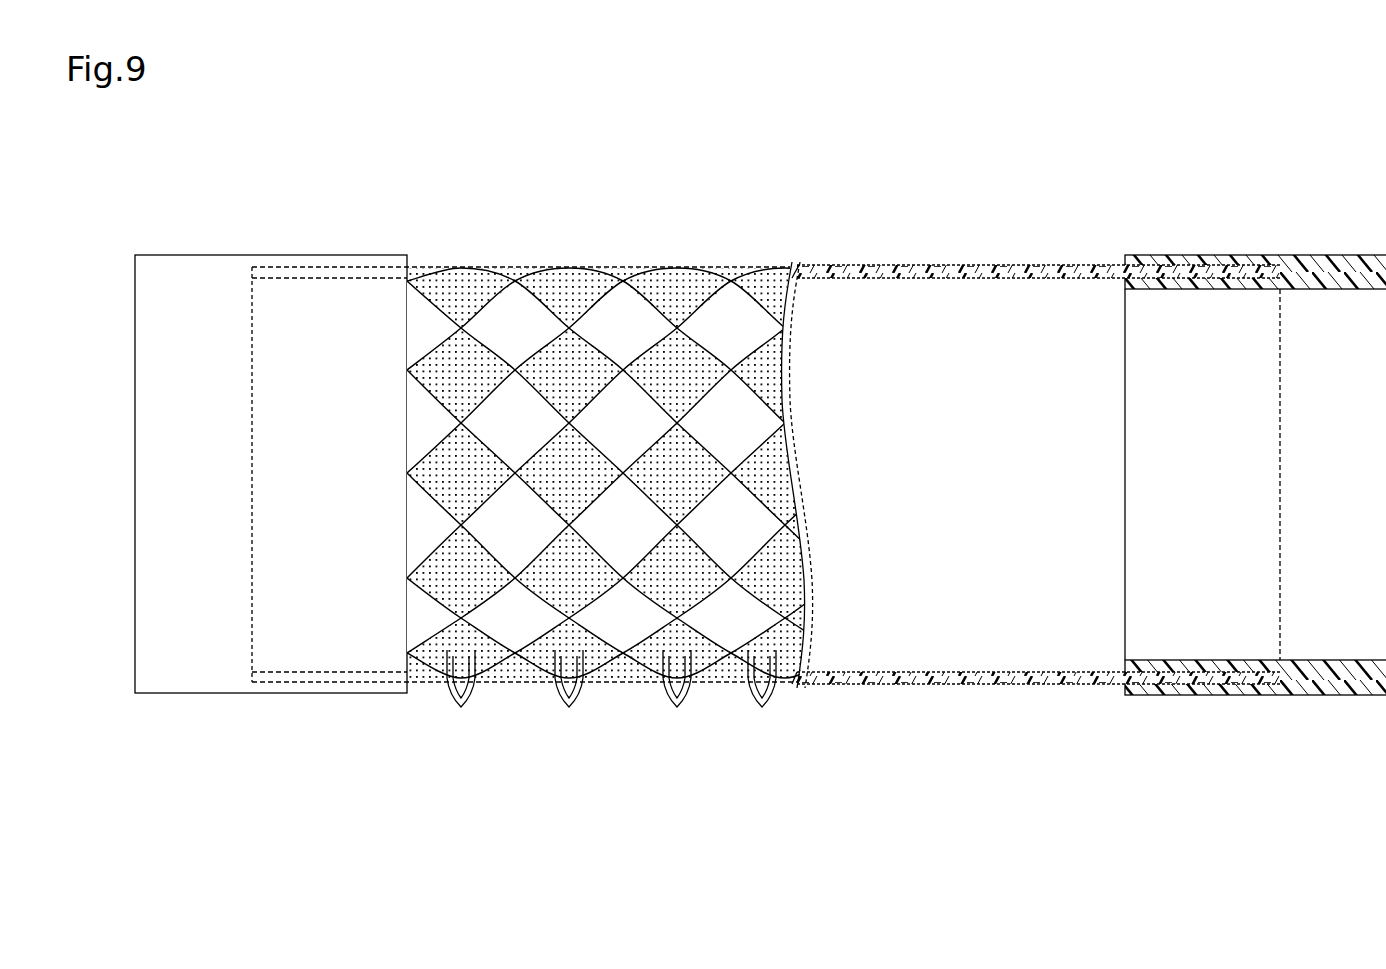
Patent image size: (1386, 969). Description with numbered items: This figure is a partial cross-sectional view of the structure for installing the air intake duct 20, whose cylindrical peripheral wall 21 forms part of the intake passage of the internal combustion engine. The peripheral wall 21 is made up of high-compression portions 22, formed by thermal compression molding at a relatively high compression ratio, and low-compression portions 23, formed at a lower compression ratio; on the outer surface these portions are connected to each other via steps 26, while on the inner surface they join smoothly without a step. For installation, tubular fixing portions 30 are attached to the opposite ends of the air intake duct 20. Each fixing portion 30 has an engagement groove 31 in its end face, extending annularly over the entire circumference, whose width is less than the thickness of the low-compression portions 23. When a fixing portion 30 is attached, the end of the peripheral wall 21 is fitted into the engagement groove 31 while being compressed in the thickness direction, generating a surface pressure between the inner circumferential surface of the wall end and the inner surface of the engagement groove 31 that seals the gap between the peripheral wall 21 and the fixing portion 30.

The air intake duct 20 is at (583, 410).
The peripheral wall 21 is at (330, 265).
The high-compression portions 22 is at (452, 300).
The low-compression portions 23 is at (512, 274).
The steps 26 is at (460, 705).
The fixing portion 30 is at (210, 253).
The engagement groove 31 is at (340, 280).